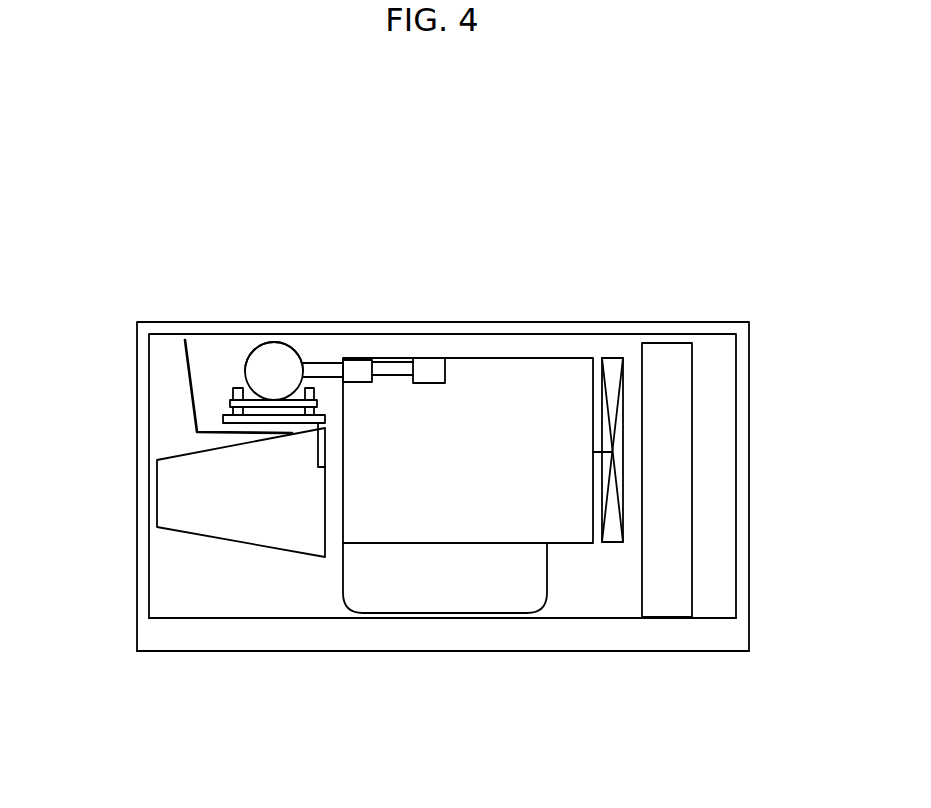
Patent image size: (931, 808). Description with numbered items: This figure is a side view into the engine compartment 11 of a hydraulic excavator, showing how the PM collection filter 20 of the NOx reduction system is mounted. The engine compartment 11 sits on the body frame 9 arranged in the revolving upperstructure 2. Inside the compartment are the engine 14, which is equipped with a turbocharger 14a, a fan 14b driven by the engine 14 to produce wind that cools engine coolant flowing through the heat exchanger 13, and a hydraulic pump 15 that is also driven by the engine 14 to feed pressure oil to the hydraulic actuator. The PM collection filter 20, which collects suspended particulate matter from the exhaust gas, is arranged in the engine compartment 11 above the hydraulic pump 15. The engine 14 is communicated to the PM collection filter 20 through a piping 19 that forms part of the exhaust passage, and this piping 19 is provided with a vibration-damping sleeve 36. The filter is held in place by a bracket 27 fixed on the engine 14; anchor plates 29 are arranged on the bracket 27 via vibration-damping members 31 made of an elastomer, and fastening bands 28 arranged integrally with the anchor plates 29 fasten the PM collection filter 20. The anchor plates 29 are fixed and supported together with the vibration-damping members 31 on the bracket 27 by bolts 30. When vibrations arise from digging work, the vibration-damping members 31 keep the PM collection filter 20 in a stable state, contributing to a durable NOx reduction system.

The revolving upperstructure 2 is at (752, 541).
The body frame 9 is at (440, 652).
The engine compartment 11 is at (613, 567).
The heat exchanger 13 is at (692, 385).
The engine 14 is at (507, 428).
The turbocharger 14a is at (433, 367).
The fan 14b is at (611, 368).
The hydraulic pump 15 is at (268, 537).
The piping 19 is at (392, 368).
The PM collection filter 20 is at (277, 367).
The bracket 27 is at (250, 421).
The fastening bands 28 is at (263, 344).
The anchor plates 29 is at (232, 404).
The bolts 30 is at (240, 388).
The vibration-damping members 31 is at (228, 416).
The vibration-damping sleeve 36 is at (363, 365).